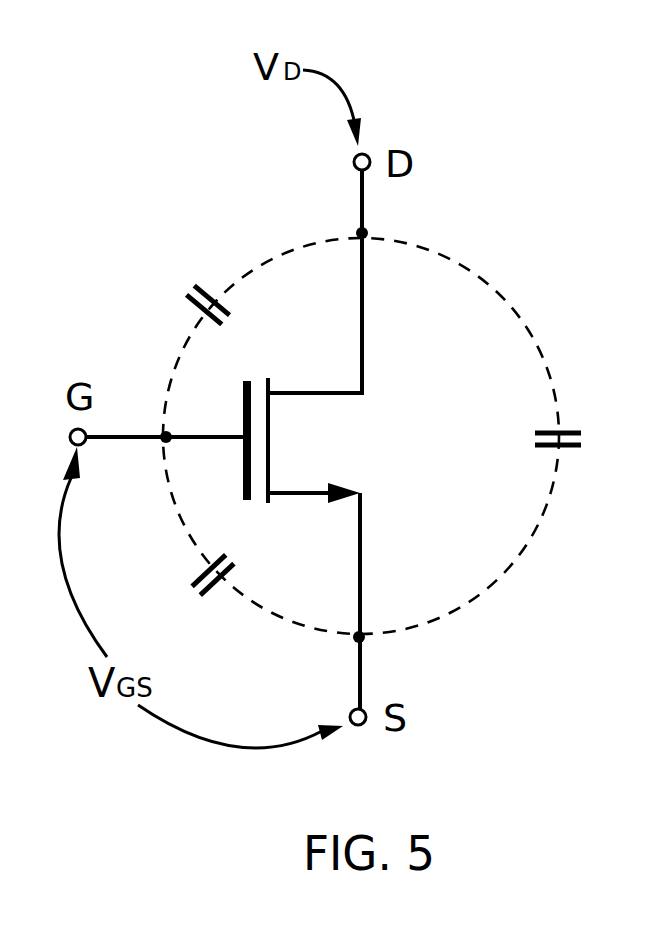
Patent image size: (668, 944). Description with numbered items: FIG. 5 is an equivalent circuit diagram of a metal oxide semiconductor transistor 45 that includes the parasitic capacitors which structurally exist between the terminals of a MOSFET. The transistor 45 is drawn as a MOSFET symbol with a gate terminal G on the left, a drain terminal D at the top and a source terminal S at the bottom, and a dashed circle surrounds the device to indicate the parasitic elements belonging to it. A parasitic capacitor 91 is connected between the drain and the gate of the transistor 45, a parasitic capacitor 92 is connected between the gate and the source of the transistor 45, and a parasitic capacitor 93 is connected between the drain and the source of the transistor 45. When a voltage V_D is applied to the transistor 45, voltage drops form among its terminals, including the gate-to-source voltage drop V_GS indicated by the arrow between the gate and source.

The transistor 45 is at (656, 180).
The parasitic capacitor 91 is at (190, 285).
The parasitic capacitor 92 is at (193, 593).
The parasitic capacitor 93 is at (584, 440).